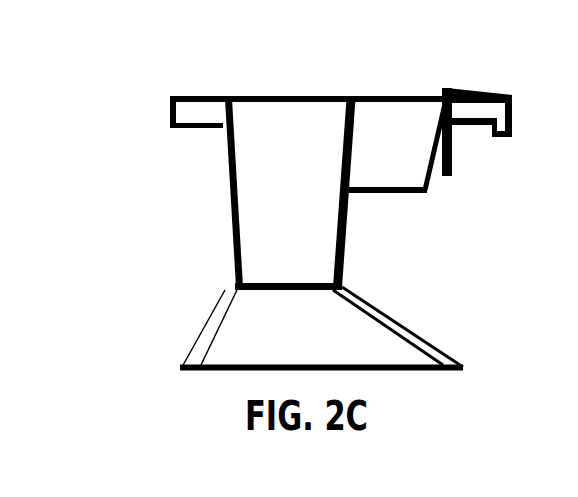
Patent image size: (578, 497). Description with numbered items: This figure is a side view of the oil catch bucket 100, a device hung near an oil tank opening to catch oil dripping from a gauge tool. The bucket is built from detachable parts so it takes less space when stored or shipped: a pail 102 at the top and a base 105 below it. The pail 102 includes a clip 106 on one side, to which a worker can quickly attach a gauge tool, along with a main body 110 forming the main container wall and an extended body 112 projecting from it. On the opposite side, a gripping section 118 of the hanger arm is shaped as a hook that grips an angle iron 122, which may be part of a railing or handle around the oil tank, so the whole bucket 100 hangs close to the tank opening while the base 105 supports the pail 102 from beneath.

The oil catch bucket 100 is at (172, 78).
The pail 102 is at (296, 104).
The base 105 is at (237, 330).
The clip 106 is at (190, 118).
The main body 110 is at (230, 185).
The extended body 112 is at (382, 190).
The gripping section 118 is at (475, 100).
The angle iron 122 is at (455, 165).